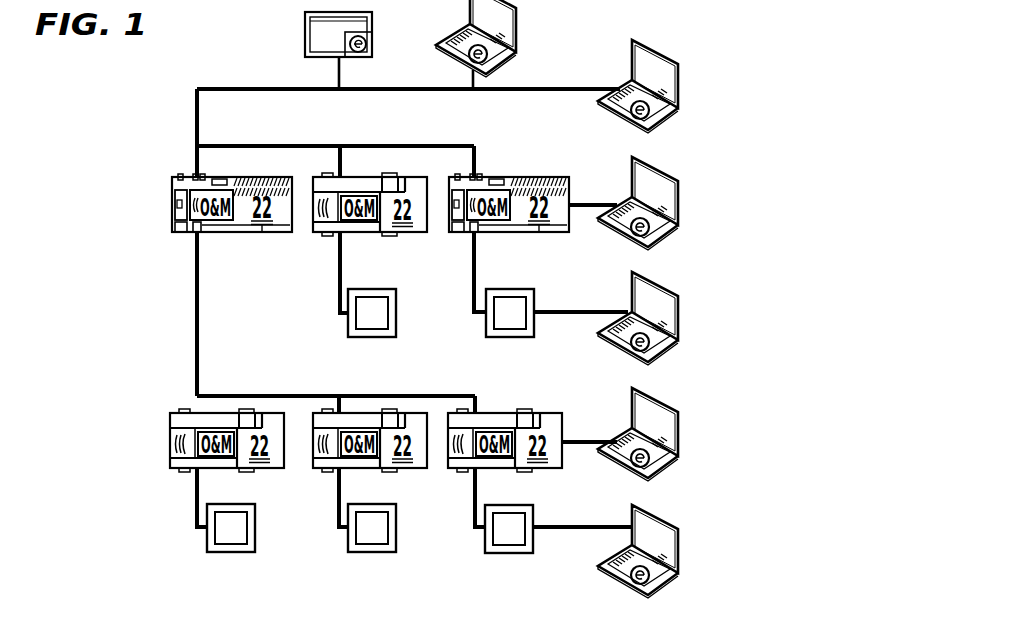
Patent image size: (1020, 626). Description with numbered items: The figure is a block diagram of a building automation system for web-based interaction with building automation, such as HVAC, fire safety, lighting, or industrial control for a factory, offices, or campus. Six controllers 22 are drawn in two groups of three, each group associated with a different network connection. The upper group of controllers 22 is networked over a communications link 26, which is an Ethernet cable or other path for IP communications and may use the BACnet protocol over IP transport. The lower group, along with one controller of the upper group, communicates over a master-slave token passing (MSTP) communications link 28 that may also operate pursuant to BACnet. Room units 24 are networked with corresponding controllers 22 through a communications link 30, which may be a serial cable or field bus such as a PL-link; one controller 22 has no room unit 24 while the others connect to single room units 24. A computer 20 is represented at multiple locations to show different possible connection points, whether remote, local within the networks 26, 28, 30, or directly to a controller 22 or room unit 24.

The computer 20 is at (305, 36).
The controller 22 is at (393, 350).
The room unit 24 is at (373, 288).
The communications link 26 is at (163, 133).
The MSTP communications link 28 is at (162, 323).
The communications link 30 is at (162, 512).